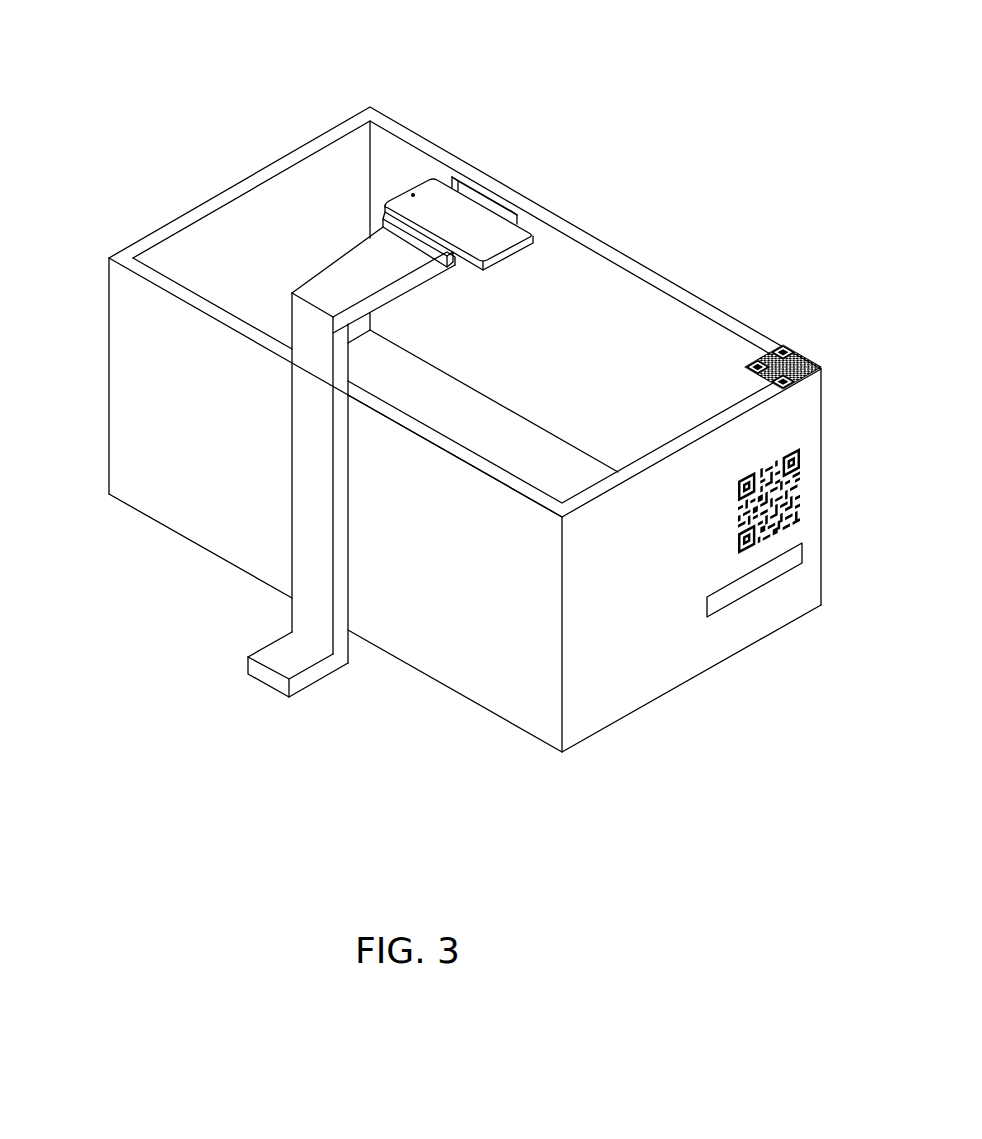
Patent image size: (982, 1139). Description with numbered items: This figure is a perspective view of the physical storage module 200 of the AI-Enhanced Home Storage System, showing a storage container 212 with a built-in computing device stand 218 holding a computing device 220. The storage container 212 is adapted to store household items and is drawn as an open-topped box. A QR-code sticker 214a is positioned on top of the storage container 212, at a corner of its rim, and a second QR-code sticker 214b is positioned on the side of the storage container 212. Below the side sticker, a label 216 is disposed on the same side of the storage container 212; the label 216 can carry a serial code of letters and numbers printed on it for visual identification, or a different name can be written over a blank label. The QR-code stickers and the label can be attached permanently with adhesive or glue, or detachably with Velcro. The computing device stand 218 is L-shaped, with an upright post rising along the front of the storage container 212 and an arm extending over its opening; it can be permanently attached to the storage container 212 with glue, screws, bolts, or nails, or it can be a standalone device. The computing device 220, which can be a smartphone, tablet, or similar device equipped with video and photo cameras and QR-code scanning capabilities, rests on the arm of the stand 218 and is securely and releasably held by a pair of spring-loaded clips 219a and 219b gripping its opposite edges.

The physical storage module 200 is at (120, 60).
The storage container 212 is at (597, 236).
The QR-code sticker 214a is at (803, 347).
The QR-code sticker 214b is at (800, 482).
The label 216 is at (803, 550).
The computing device stand 218 is at (305, 549).
The spring-loaded clip 219a is at (498, 206).
The spring-loaded clip 219b is at (385, 214).
The computing device 220 is at (438, 198).